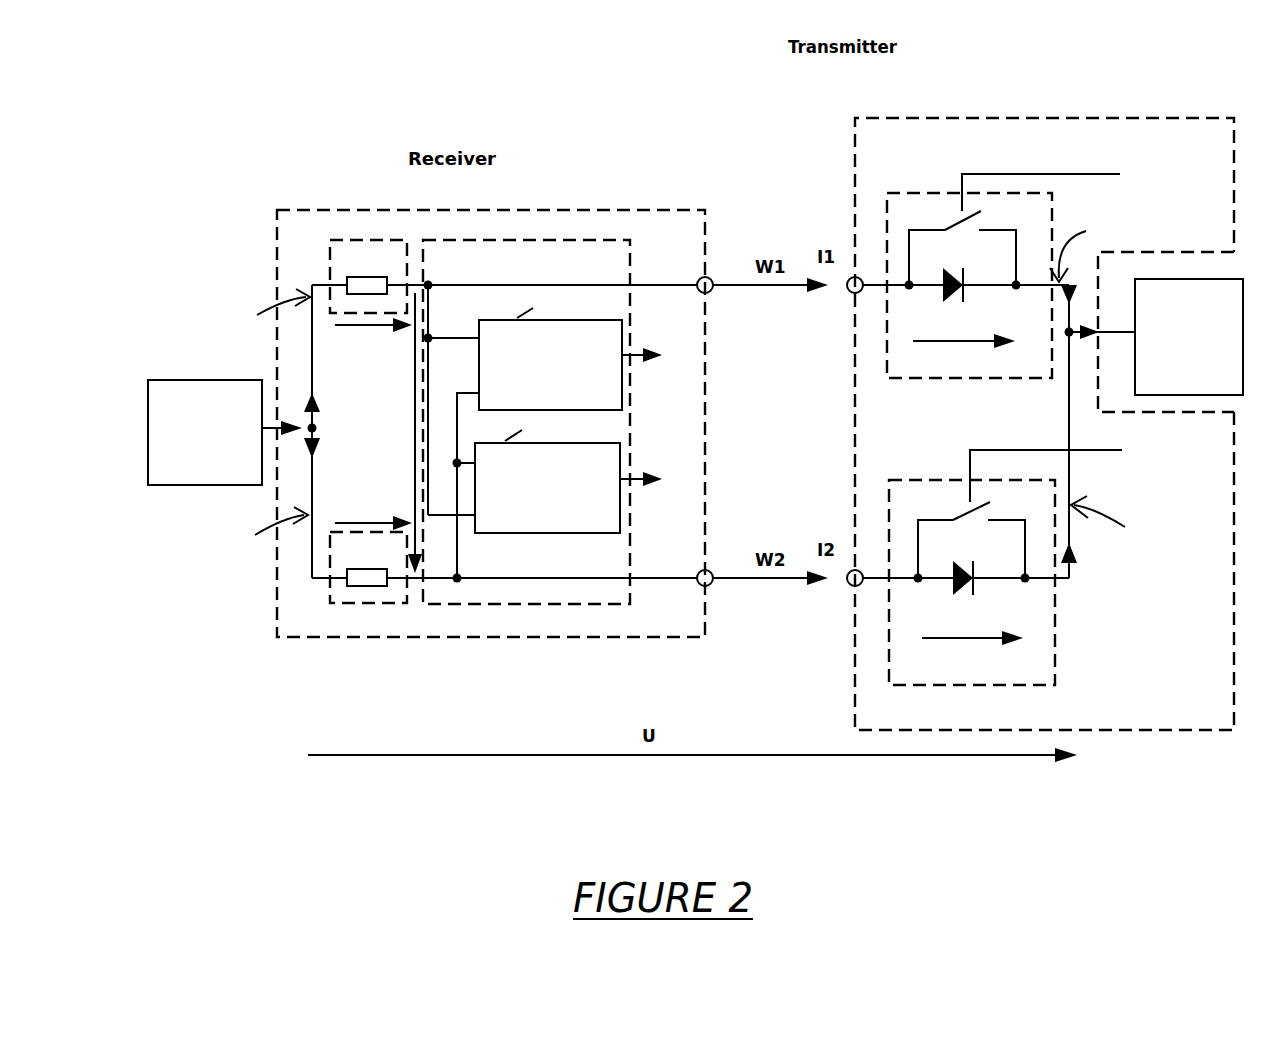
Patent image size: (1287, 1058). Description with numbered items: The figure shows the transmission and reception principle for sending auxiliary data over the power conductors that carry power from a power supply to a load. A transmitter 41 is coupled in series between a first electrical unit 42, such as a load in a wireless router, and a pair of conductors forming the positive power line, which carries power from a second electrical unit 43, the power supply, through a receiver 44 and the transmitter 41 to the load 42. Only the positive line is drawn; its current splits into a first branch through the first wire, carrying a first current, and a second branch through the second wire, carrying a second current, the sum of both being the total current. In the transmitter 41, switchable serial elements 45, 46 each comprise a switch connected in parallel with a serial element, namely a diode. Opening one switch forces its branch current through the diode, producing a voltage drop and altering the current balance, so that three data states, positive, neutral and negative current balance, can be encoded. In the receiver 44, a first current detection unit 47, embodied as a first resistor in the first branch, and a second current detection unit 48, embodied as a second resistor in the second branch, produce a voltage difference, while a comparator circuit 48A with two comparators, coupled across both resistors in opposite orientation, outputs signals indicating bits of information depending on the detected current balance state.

The transmitter 41 is at (915, 117).
The first electrical unit/load 42 is at (1200, 377).
The second electrical unit/power supply 43 is at (208, 470).
The receiver 44 is at (295, 208).
The switchable serial element 45 is at (1055, 226).
The switchable serial element 46 is at (908, 477).
The first current detection unit 47 is at (330, 260).
The second current detection unit 48 is at (333, 592).
The comparator circuit 48A is at (522, 237).